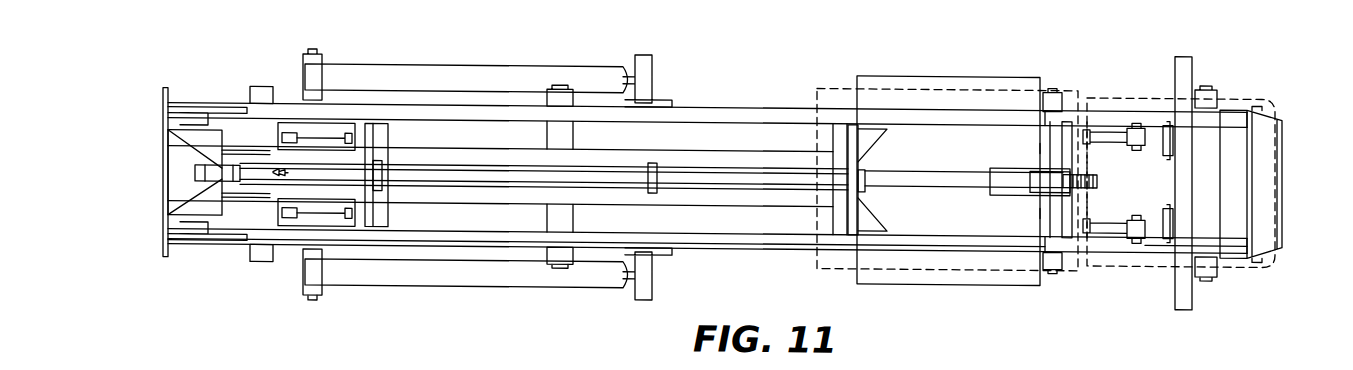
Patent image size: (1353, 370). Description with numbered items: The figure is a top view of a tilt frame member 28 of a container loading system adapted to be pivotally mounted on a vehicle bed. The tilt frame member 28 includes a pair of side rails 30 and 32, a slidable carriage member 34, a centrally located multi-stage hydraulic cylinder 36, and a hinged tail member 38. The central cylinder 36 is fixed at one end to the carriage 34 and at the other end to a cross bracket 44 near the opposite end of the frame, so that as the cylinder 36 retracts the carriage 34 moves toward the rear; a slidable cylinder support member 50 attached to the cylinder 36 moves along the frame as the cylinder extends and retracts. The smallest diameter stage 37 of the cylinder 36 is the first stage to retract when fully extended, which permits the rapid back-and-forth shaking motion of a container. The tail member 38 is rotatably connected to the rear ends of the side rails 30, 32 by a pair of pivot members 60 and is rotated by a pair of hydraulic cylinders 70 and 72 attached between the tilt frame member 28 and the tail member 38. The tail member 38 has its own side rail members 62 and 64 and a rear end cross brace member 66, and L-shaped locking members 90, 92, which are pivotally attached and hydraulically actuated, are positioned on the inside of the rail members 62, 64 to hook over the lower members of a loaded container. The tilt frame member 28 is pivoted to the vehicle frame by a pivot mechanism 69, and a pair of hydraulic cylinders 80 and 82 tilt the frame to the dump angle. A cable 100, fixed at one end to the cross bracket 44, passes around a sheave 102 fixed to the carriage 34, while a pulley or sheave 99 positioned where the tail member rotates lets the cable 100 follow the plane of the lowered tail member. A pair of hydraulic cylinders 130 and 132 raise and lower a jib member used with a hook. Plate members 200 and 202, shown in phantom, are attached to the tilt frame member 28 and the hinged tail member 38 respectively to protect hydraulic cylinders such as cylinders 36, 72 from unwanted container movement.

The tilt frame member 28 is at (758, 242).
The side rail 30 is at (678, 247).
The side rail 32 is at (745, 115).
The slidable carriage member 34 is at (240, 218).
The central hydraulic cylinder 36 is at (475, 172).
The smallest diameter stage 37 is at (927, 179).
The hinged tail member 38 is at (1157, 252).
The cross bracket 44 is at (1050, 211).
The slidable cylinder support member 50 is at (867, 199).
The pivot member 60 is at (1087, 107).
The side rail member 62 is at (1150, 111).
The side rail member 64 is at (1110, 252).
The rear end cross brace member 66 is at (1270, 172).
The pivot mechanism 69 is at (1052, 275).
The hydraulic cylinder 70 is at (1108, 140).
The hydraulic cylinder 72 is at (1110, 225).
The hydraulic cylinder 80 is at (472, 80).
The hydraulic cylinder 82 is at (423, 282).
The L-shaped locking member 90 is at (1175, 148).
The L-shaped locking member 92 is at (1173, 216).
The pulley or sheave 99 is at (1097, 185).
The cable 100 is at (957, 185).
The sheave or pulley member 102 is at (195, 183).
The hydraulic cylinder 130 is at (310, 216).
The hydraulic cylinder 132 is at (307, 143).
The plate member 200 is at (957, 85).
The plate member 202 is at (1262, 103).